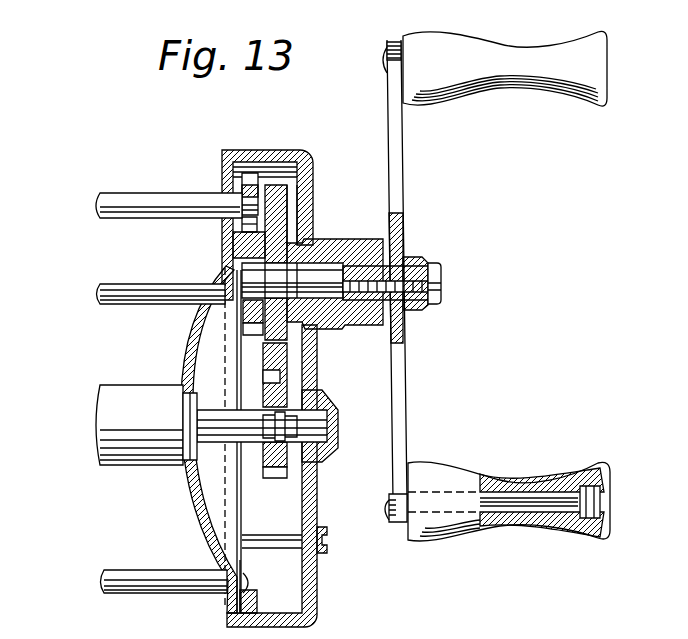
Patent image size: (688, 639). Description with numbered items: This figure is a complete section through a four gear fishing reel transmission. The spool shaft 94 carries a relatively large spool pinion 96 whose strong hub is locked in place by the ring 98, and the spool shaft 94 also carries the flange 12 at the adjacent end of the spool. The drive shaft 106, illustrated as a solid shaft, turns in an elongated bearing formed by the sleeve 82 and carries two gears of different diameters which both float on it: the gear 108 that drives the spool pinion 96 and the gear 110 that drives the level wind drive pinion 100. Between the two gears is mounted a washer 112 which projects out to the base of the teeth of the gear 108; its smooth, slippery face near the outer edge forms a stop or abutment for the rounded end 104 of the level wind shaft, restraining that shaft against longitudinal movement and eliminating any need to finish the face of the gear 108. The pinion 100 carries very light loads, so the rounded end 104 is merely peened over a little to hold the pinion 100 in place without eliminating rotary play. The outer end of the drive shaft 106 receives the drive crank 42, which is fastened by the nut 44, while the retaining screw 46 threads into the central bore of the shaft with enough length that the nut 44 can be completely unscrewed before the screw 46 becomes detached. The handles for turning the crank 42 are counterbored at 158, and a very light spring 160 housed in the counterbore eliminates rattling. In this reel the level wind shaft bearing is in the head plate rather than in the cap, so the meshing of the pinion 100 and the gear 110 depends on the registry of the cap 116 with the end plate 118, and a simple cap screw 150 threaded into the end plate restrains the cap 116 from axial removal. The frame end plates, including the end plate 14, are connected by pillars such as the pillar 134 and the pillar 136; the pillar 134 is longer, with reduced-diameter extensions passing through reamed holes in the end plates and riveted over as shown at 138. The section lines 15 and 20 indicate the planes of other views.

The flange 12 is at (192, 508).
The end plate 14 is at (254, 146).
The section line 15- 15 is at (300, 137).
The section line 20- 20 is at (252, 590).
The drive crank 42 is at (403, 152).
The nut 44 is at (407, 266).
The retaining screw 46 is at (432, 303).
The sleeve 82 is at (349, 318).
The spool shaft 94 is at (224, 432).
The pinion 96 is at (240, 391).
The ring 98 is at (306, 462).
The level wind drive pinion 100 is at (225, 190).
The rounded end 104 is at (268, 200).
The shaft 106 is at (325, 282).
The gear 108 is at (288, 210).
The gear 110 is at (222, 245).
The washer 112 is at (232, 257).
The cap 116 is at (310, 374).
The end plate 118 is at (223, 152).
The pillar 134 is at (147, 578).
The pillar 136 is at (140, 306).
The riveted end 138 is at (248, 583).
The cap screw 150 is at (292, 543).
The counterbore 158 is at (594, 468).
The spring 160 is at (600, 502).